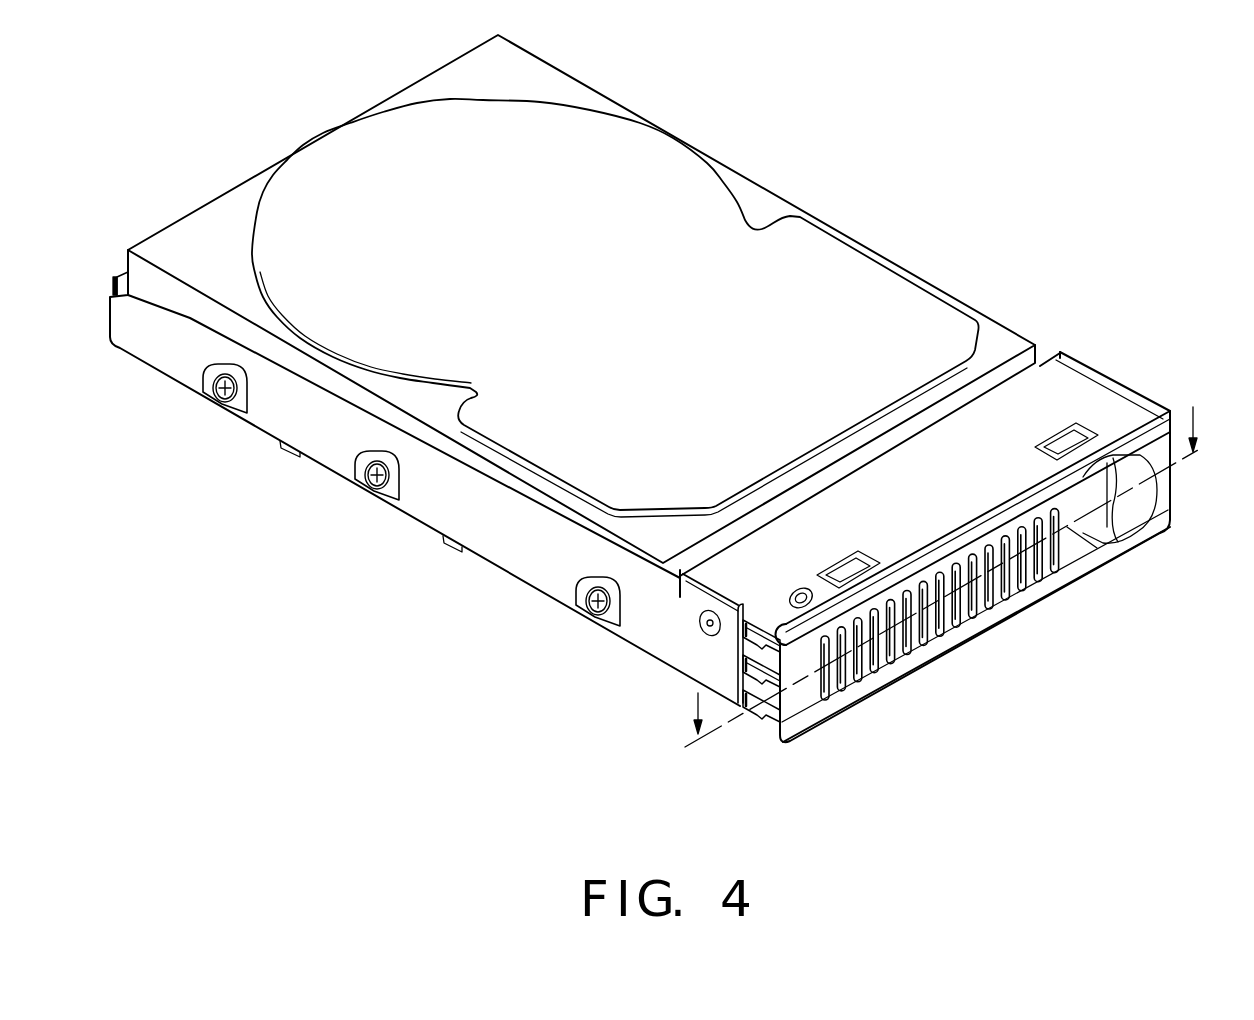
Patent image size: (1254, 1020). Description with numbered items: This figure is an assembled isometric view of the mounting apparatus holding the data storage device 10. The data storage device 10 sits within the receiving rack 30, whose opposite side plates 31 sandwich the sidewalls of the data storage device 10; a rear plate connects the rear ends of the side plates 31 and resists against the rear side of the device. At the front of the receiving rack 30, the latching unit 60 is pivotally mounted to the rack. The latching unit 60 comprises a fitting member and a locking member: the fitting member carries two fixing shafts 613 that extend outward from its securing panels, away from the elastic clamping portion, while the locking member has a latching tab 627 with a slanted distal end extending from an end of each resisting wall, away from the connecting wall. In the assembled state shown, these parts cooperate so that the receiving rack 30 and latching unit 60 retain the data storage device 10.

The data storage device 10 is at (649, 188).
The receiving rack 30 is at (1117, 366).
The side plates 31 is at (453, 497).
The latching unit 60 is at (965, 630).
The fixing shafts 613 is at (740, 633).
The latching tab 627 is at (738, 663).